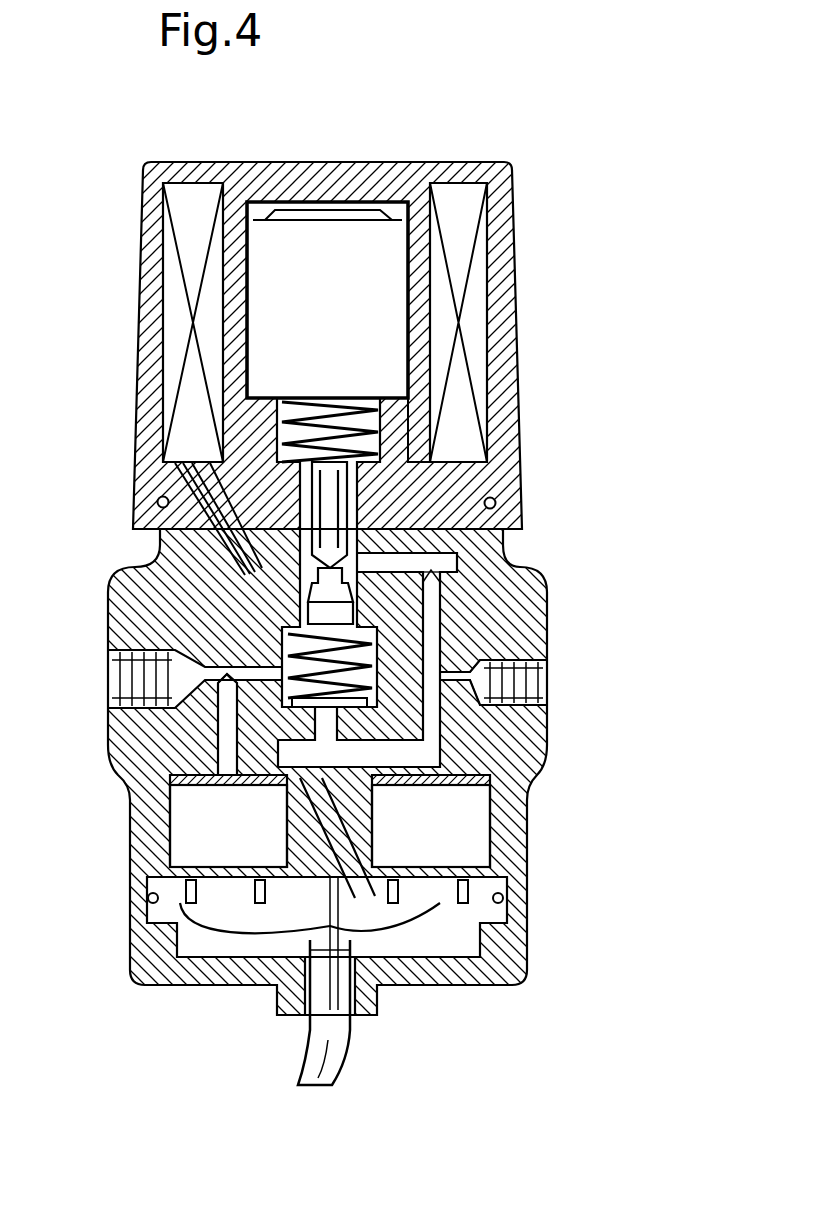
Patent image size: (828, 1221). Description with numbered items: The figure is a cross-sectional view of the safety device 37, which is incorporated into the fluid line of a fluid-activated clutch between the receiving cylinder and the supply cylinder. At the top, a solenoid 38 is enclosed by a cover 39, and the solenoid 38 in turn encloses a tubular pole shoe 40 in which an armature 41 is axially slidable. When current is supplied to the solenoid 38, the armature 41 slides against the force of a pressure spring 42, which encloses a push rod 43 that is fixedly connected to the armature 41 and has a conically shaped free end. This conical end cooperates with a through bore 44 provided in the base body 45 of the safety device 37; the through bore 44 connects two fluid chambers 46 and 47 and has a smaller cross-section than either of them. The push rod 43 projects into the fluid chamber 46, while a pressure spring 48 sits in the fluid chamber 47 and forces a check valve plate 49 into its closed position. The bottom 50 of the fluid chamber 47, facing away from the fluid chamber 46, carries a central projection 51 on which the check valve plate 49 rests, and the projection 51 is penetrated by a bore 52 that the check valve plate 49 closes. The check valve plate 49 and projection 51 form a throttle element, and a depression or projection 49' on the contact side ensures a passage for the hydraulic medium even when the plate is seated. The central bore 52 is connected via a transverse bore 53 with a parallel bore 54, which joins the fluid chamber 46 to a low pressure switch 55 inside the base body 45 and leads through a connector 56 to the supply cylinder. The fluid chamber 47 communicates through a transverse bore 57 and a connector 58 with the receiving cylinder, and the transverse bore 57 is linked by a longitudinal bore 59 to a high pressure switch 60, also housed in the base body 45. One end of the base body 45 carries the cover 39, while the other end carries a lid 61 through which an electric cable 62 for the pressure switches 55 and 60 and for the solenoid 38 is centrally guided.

The safety device 37 is at (410, 93).
The solenoid 38 is at (178, 278).
The cover 39 is at (183, 172).
The tubular pole shoe 40 is at (425, 282).
The armature 41 is at (372, 245).
The pressure spring 42 is at (333, 505).
The push rod 43 is at (432, 458).
The through bore 44 is at (470, 555).
The base body 45 is at (525, 755).
The fluid chamber 46 is at (152, 553).
The fluid chamber 47 is at (195, 673).
The pressure spring 48 is at (290, 590).
The check valve plate 49 is at (445, 635).
The depression or projection 49' is at (171, 724).
The bottom 50 is at (425, 722).
The central projection 51 is at (440, 688).
The bore 52 is at (290, 787).
The transverse bore 53 is at (393, 788).
The parallel bore 54 is at (493, 786).
The low pressure switch 55 is at (460, 838).
The connector 56 is at (549, 662).
The transverse bore 57 is at (195, 643).
The connector 58 is at (112, 660).
The longitudinal bore 59 is at (160, 778).
The high pressure switch 60 is at (180, 832).
The lid 61 is at (505, 968).
The electric cable 62 is at (342, 1042).